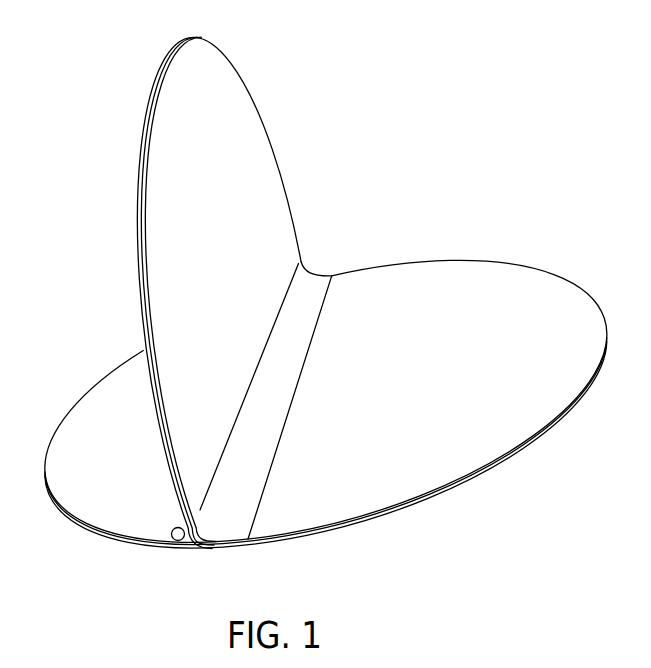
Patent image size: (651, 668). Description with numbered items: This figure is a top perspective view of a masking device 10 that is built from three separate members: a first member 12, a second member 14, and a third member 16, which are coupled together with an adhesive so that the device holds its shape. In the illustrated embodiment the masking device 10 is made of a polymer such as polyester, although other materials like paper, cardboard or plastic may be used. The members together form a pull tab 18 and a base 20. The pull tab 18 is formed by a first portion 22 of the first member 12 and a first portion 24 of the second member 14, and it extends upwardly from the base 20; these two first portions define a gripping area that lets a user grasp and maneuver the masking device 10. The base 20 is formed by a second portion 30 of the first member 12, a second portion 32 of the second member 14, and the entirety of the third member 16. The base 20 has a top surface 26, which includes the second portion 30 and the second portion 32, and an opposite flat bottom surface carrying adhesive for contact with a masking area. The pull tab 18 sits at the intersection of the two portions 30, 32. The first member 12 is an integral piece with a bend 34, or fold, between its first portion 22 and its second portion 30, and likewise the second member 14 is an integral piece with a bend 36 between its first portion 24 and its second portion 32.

The masking device 10 is at (572, 82).
The first member 12 is at (337, 225).
The second member 14 is at (80, 347).
The third member 16 is at (411, 538).
The pull tab 18 is at (240, 52).
The base 20 is at (509, 478).
The first portion of the first member 22 is at (245, 133).
The first portion of the second member 24 is at (135, 178).
The top surface 26 is at (519, 280).
The second portion of the first member 30 is at (401, 378).
The second portion of the second member 32 is at (129, 475).
The bend 34 is at (220, 523).
The bend 36 is at (172, 546).